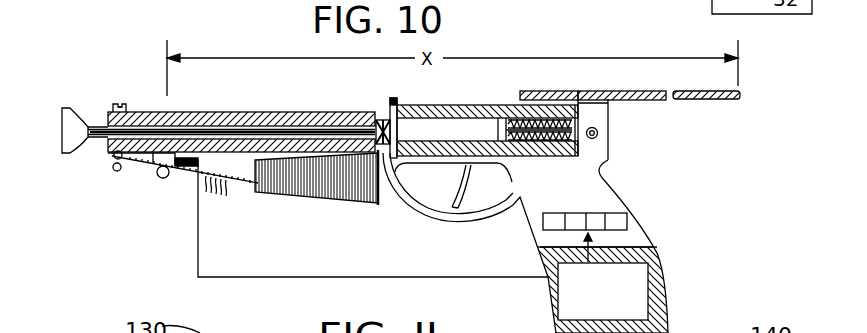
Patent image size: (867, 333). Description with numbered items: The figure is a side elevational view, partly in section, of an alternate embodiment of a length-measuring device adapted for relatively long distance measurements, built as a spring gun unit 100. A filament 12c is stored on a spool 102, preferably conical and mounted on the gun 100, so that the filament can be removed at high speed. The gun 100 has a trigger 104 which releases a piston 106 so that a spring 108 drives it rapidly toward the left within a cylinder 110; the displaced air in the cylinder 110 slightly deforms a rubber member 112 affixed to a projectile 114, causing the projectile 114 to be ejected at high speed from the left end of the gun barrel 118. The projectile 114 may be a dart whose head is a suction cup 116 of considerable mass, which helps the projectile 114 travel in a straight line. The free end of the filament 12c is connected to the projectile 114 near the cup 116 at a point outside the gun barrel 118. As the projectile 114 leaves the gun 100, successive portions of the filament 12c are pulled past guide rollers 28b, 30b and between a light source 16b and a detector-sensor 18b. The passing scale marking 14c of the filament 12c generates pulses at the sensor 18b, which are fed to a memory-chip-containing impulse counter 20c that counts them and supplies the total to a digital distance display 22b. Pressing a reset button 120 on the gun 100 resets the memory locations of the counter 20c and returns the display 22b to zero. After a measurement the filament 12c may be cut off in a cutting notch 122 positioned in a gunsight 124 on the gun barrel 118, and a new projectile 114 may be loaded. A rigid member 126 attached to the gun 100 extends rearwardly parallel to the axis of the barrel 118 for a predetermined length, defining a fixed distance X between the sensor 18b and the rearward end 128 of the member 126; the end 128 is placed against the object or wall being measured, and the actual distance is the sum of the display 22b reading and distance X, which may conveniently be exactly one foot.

The spring gun unit 100 is at (655, 184).
The spool 102 is at (345, 196).
The trigger 104 is at (462, 208).
The piston 106 is at (497, 105).
The spring 108 is at (557, 147).
The cylinder 110 is at (463, 106).
The rubber member 112 is at (385, 118).
The projectile 114 is at (293, 114).
The suction cup 116 is at (71, 110).
The gun barrel 118 is at (246, 112).
The reset button 120 is at (598, 133).
The cutting notch 122 is at (114, 105).
The gunsight 124 is at (124, 105).
The rigid member 126 is at (630, 90).
The rearward end 128 is at (740, 94).
The filament 12c is at (248, 180).
The scale marking 14c is at (226, 201).
The light source 16b is at (160, 180).
The detector-sensor 18b is at (178, 168).
The impulse counter 20c is at (640, 285).
The digital distance display 22b is at (625, 222).
The guide roller 28b is at (112, 157).
The guide roller 30b is at (115, 171).